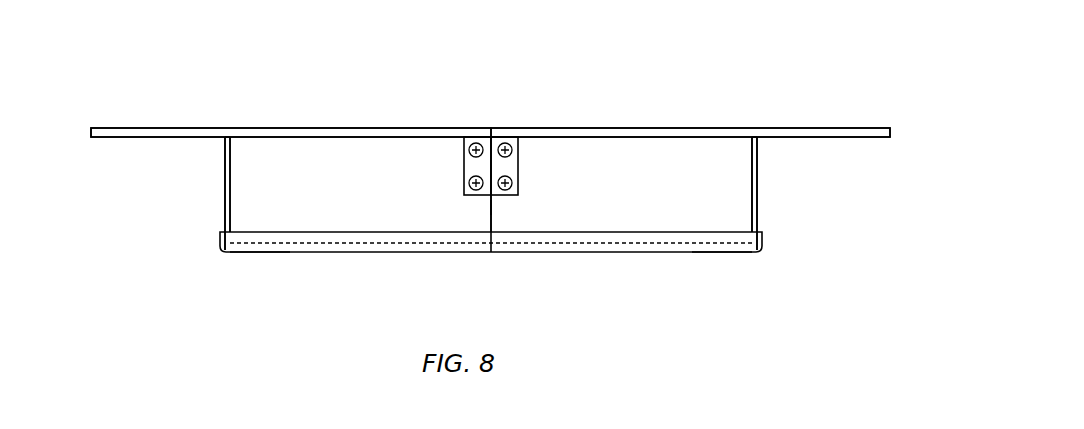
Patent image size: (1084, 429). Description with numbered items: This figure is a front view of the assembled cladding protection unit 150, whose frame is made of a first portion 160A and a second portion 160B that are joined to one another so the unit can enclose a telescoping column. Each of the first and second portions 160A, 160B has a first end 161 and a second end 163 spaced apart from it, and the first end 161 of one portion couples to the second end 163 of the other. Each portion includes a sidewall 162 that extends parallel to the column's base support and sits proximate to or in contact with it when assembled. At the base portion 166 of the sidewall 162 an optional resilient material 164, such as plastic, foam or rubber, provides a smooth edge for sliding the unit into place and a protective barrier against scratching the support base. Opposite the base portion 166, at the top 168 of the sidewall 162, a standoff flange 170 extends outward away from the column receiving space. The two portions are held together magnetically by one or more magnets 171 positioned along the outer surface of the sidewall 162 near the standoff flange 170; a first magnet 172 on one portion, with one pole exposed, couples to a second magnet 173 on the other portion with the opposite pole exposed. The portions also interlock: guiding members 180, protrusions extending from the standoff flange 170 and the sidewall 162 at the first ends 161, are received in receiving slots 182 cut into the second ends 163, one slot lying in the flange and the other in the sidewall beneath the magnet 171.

The cladding protection unit 150 is at (688, 88).
The first portion 160A is at (195, 202).
The second portion 160B is at (807, 213).
The first end 161 is at (443, 258).
The sidewall 162 is at (225, 170).
The second end 163 is at (532, 258).
The resilient material 164 is at (220, 242).
The base portion 166 is at (259, 252).
The top 168 is at (228, 128).
The standoff flange 170 is at (94, 138).
The magnet 171 is at (537, 163).
The first magnet 172 is at (440, 137).
The second magnet 173 is at (541, 137).
The guiding member 180 is at (490, 197).
The receiving slot 182 is at (478, 207).